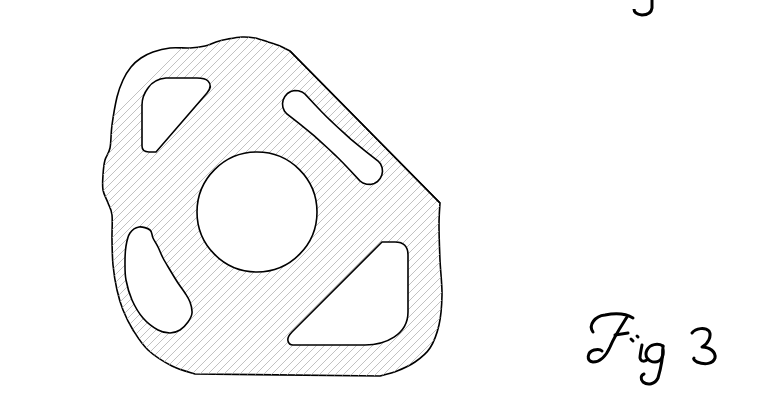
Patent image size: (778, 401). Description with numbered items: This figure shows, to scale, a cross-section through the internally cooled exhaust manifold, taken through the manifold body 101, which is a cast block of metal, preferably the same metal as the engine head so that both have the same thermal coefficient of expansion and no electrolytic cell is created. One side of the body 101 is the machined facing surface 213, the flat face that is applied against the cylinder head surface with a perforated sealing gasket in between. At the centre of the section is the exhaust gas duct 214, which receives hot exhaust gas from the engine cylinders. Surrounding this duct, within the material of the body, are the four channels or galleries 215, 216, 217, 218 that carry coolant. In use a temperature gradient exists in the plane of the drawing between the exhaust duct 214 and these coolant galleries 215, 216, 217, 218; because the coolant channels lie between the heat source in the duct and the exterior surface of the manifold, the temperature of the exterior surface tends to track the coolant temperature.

The exhaust manifold body 101 is at (417, 213).
The machined facing surface 213 is at (365, 118).
The central exhaust gas duct 214 is at (277, 225).
The coolant channel 215 is at (385, 303).
The coolant channel 216 is at (163, 307).
The coolant channel 217 is at (313, 117).
The coolant channel 218 is at (163, 118).